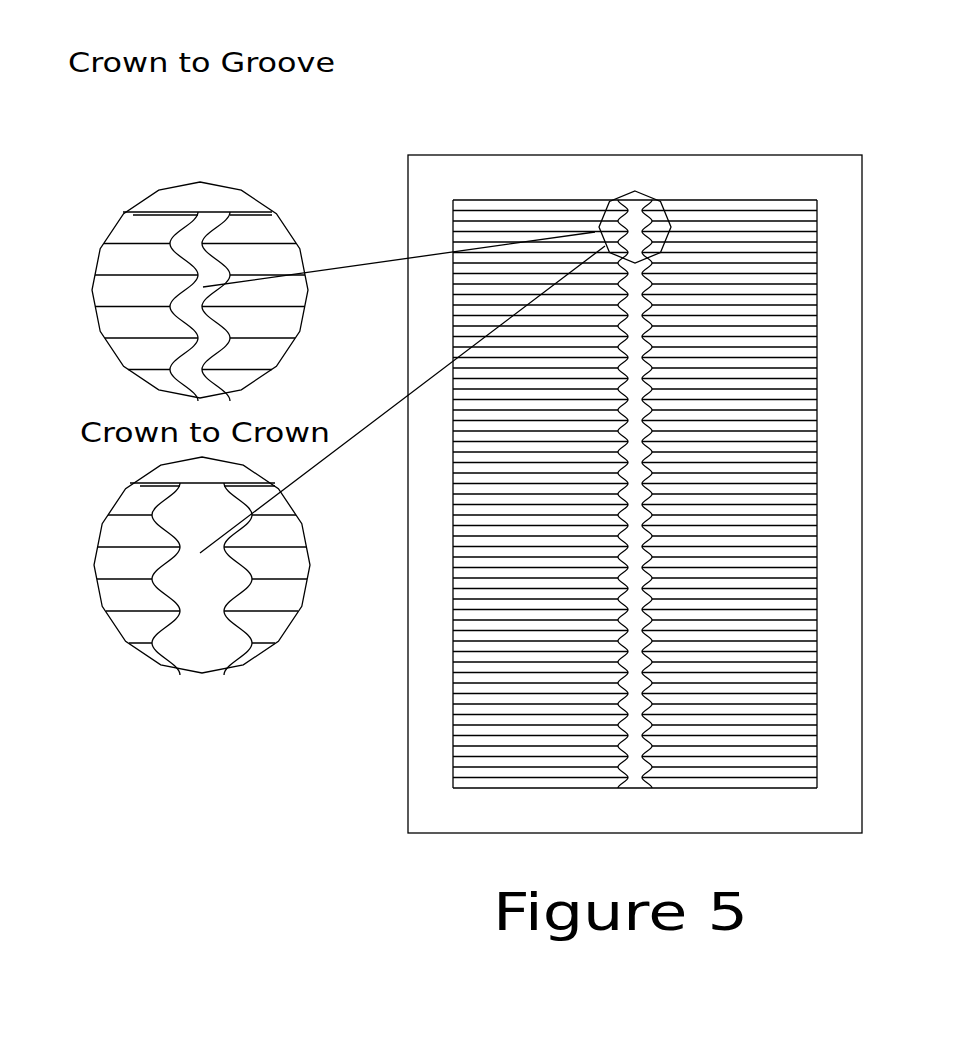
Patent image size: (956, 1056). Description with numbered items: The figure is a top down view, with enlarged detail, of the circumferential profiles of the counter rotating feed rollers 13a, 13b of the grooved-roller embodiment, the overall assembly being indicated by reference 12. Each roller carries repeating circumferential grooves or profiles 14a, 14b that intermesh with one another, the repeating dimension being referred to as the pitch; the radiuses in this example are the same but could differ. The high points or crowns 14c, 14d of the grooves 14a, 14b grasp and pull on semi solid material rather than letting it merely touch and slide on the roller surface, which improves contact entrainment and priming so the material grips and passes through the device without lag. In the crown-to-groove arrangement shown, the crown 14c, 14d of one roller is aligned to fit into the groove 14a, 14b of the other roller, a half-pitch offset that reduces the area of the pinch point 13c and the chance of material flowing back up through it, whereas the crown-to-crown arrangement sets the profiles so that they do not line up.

The heat exchanger core 12 is at (435, 180).
The counter rotating feed roller 13a is at (542, 200).
The counter rotating feed roller 13b is at (730, 200).
The pinch point 13c is at (213, 701).
The circumferential groove 14a is at (156, 751).
The circumferential groove 14b is at (279, 757).
The crown 14c is at (97, 688).
The crown 14d is at (316, 688).